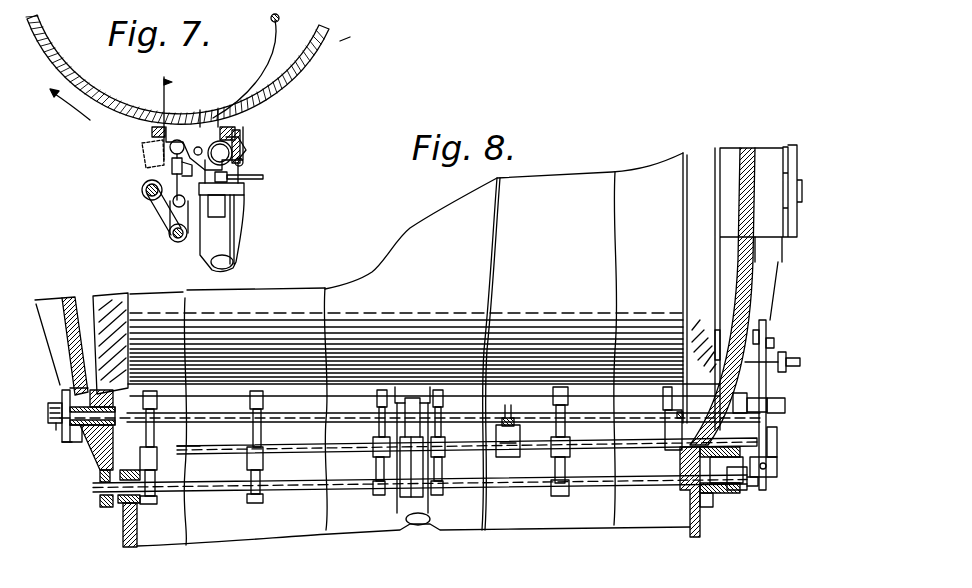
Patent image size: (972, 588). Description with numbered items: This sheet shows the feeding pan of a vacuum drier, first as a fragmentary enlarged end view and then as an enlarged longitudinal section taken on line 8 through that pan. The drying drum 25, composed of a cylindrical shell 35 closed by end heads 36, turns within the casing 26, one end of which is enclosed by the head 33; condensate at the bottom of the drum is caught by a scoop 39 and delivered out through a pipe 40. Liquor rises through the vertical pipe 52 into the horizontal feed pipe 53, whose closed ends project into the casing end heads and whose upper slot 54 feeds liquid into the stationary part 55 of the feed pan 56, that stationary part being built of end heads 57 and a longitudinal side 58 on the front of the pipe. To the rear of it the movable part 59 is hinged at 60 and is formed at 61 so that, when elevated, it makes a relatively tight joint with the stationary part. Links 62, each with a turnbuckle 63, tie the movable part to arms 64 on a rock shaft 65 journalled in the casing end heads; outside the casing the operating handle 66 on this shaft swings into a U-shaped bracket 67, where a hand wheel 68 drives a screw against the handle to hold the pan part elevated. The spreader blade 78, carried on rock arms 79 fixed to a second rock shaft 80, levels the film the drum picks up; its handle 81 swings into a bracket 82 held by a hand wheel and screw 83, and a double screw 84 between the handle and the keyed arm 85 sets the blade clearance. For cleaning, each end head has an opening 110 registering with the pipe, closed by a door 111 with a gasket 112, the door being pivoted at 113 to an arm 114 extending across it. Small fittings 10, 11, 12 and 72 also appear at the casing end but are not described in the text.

In FIG. 7, the section line 8 is at (164, 259).
In FIG. 8, the nut 10 is at (792, 362).
In FIG. 8, the rod 11 is at (766, 330).
In FIG. 8, the bolt 12 is at (48, 410).
In FIG. 7, the drying drum 25 is at (352, 43).
In FIG. 8, the drying drum 25 is at (585, 176).
In FIG. 8, the casing 26 is at (65, 290).
In FIG. 8, the head 33 is at (73, 300).
In FIG. 7, the cylindrical shell 35 is at (44, 25).
In FIG. 8, the cylindrical shell 35 is at (406, 267).
In FIG. 8, the end head 36 is at (116, 300).
In FIG. 7, the scoop 39 is at (173, 103).
In FIG. 8, the scoop 39 is at (728, 156).
In FIG. 7, the pipe 40 is at (281, 19).
In FIG. 7, the vertical pipe 52 is at (236, 258).
In FIG. 8, the vertical pipe 52 is at (421, 526).
In FIG. 7, the horizontal feed pipe 53 is at (262, 175).
In FIG. 8, the horizontal feed pipe 53 is at (92, 427).
In FIG. 7, the slot 54 is at (233, 151).
In FIG. 7, the stationary part 55 is at (242, 140).
In FIG. 7, the feed pan 56 is at (146, 134).
In FIG. 8, the feed pan 56 is at (387, 390).
In FIG. 7, the end heads 57 is at (224, 127).
In FIG. 7, the longitudinal side 58 is at (236, 129).
In FIG. 7, the movable part 59 is at (170, 147).
In FIG. 8, the movable part 59 is at (512, 418).
In FIG. 7, the hinge 60 is at (172, 167).
In FIG. 8, the hinge 60 is at (260, 393).
In FIG. 7, the joint formation 61 is at (204, 128).
In FIG. 7, the links or rods 62 is at (147, 200).
In FIG. 8, the links or rods 62 is at (262, 456).
In FIG. 7, the turnbuckle 63 is at (188, 172).
In FIG. 8, the turnbuckle 63 is at (566, 430).
In FIG. 7, the arms 64 is at (182, 218).
In FIG. 8, the arms 64 is at (146, 498).
In FIG. 7, the rock shaft 65 is at (205, 233).
In FIG. 8, the rock shaft 65 is at (93, 490).
In FIG. 8, the operating handle 66 is at (735, 492).
In FIG. 8, the U-shaped bracket 67 is at (748, 495).
In FIG. 8, the hand wheel 68 is at (750, 490).
In FIG. 8, the bearing 72 is at (109, 396).
In FIG. 7, the spreader blade 78 is at (160, 124).
In FIG. 7, the rock arms 79 is at (142, 192).
In FIG. 8, the rock arms 79 is at (512, 457).
In FIG. 7, the rock shaft 80 is at (175, 178).
In FIG. 8, the rock shaft 80 is at (782, 441).
In FIG. 8, the handle 81 is at (766, 332).
In FIG. 8, the U-shaped bracket 82 is at (774, 344).
In FIG. 8, the hand wheel and screw 83 is at (780, 396).
In FIG. 8, the double screw 84 is at (777, 468).
In FIG. 8, the arm 85 is at (772, 429).
In FIG. 8, the opening 110 is at (64, 388).
In FIG. 8, the door 111 is at (62, 437).
In FIG. 8, the gasket 112 is at (70, 435).
In FIG. 8, the pivot 113 is at (62, 400).
In FIG. 8, the arm 114 is at (55, 421).